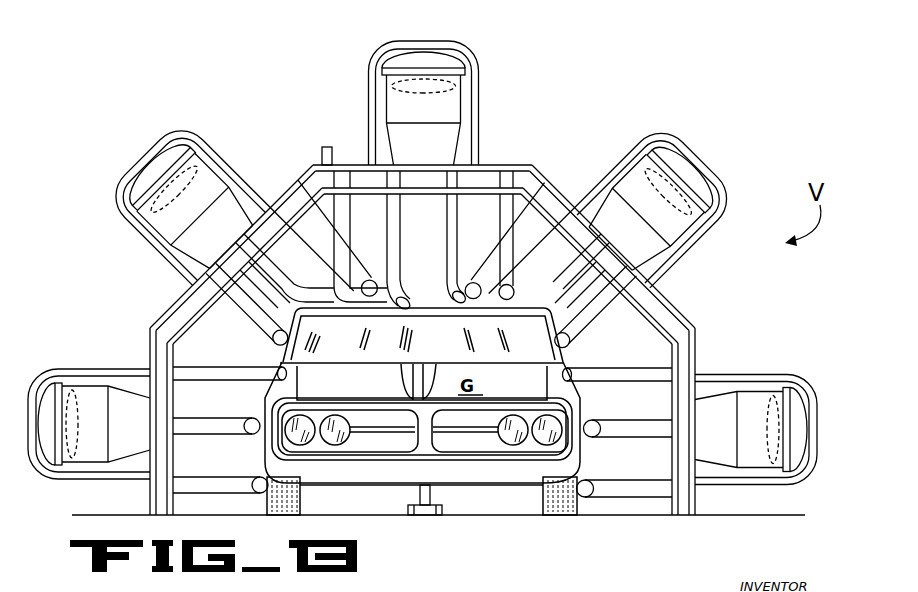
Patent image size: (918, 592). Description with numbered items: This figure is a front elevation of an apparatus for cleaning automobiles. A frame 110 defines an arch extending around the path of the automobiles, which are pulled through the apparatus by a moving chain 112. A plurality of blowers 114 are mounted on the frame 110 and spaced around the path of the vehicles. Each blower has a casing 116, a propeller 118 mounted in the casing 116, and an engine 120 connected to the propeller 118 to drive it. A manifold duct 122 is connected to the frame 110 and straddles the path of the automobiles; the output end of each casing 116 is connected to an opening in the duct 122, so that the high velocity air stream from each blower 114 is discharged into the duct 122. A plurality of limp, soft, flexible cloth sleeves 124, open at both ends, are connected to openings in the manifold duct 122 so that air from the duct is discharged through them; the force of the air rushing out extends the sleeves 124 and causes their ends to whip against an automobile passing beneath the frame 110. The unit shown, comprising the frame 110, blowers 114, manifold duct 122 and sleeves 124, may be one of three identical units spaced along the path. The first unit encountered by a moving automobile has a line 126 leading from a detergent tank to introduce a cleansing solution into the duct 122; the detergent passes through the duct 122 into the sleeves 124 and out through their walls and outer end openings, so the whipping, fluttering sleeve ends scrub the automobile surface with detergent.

The frame 110 is at (513, 165).
The moving chain 112 is at (427, 510).
The blower 114 is at (482, 70).
The casing 116 is at (460, 108).
The propeller 118 is at (392, 84).
The engine 120 is at (419, 42).
The manifold duct 122 is at (186, 295).
The cloth sleeves 124 is at (485, 262).
The line 126 is at (328, 147).